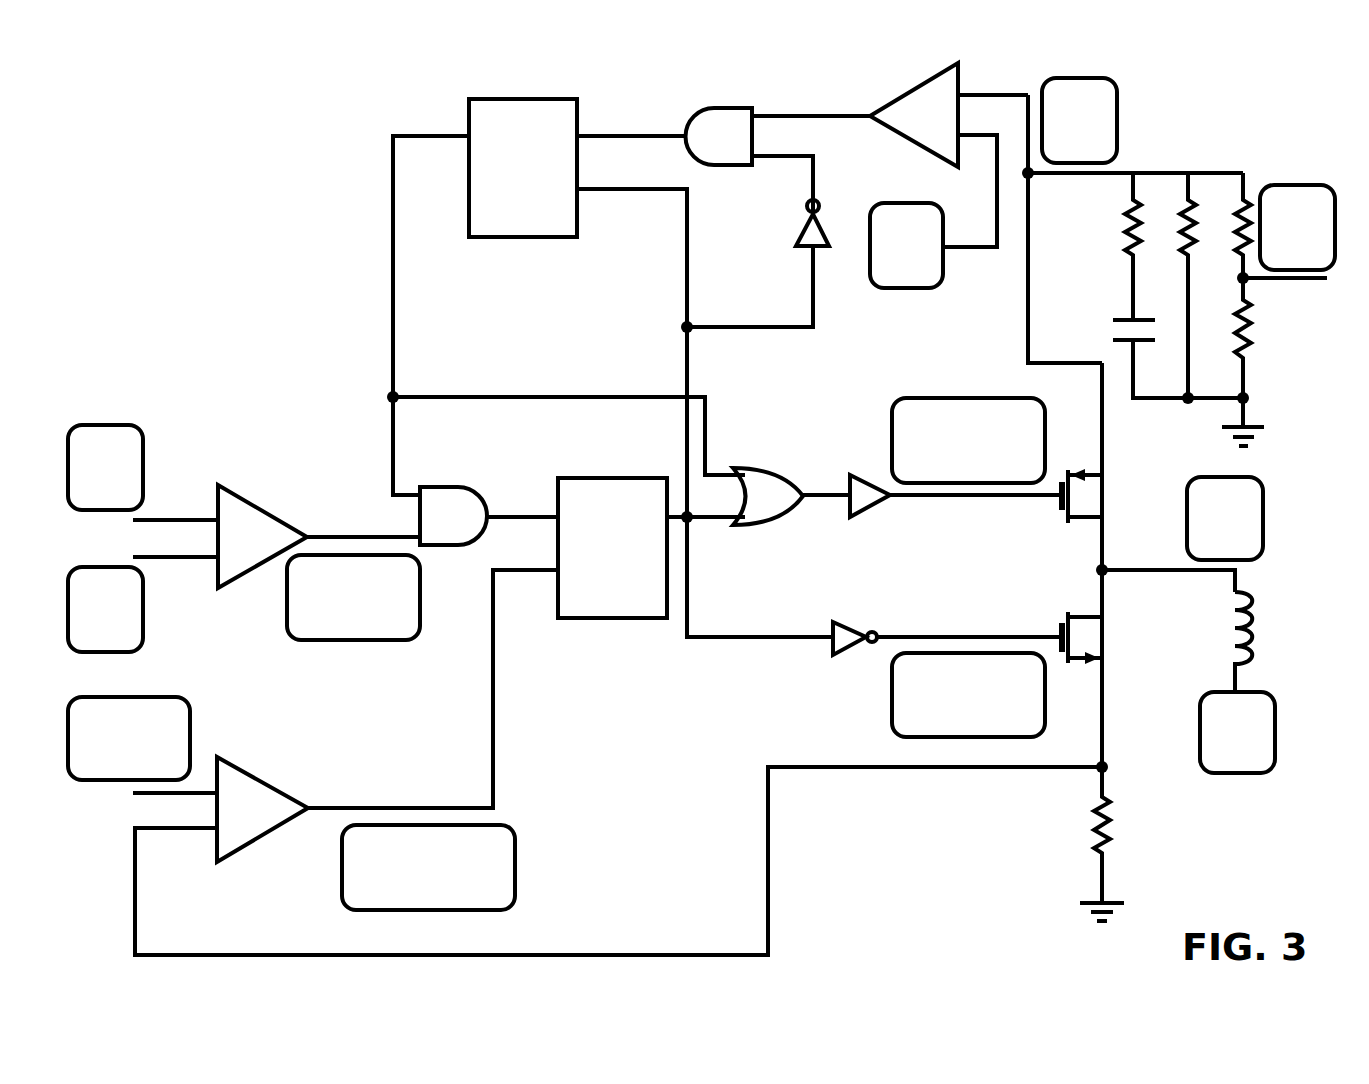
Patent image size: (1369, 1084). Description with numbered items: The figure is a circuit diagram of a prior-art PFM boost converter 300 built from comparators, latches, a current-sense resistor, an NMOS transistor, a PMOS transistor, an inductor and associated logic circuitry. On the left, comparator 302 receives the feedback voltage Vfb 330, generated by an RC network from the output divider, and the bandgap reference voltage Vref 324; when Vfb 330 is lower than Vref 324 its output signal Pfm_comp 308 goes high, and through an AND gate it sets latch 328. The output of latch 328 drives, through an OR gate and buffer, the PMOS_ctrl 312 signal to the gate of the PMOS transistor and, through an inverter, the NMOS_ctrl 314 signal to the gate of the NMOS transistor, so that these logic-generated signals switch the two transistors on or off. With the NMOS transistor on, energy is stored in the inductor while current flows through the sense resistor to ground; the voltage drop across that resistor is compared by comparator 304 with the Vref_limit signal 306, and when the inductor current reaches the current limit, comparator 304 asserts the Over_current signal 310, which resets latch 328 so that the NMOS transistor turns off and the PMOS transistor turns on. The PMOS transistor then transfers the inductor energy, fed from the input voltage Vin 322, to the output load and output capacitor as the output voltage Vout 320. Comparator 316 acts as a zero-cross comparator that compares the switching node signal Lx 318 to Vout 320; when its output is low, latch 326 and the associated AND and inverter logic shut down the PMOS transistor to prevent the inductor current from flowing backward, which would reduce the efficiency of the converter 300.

The PFM boost converter 300 is at (1214, 82).
The comparator 302 is at (260, 507).
The comparator 304 is at (260, 778).
The Vref_limit signal 306 is at (129, 738).
The Pfm_comp 308 is at (353, 597).
The Over_current signal 310 is at (428, 867).
The PMOS_ctrl 312 is at (968, 440).
The NMOS_ctrl 314 is at (968, 695).
The comparator 316 is at (958, 64).
The Lx 318 is at (1066, 381).
The Vout 320 is at (1079, 120).
The Vin 322 is at (1237, 732).
The Vref 324 is at (105, 609).
The latch 326 is at (522, 99).
The latch 328 is at (575, 478).
The Vfb 330 is at (701, 347).